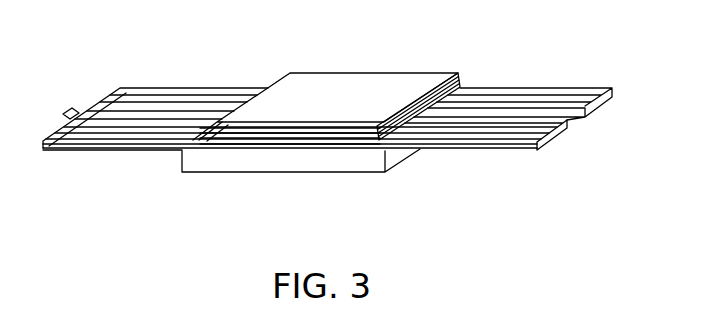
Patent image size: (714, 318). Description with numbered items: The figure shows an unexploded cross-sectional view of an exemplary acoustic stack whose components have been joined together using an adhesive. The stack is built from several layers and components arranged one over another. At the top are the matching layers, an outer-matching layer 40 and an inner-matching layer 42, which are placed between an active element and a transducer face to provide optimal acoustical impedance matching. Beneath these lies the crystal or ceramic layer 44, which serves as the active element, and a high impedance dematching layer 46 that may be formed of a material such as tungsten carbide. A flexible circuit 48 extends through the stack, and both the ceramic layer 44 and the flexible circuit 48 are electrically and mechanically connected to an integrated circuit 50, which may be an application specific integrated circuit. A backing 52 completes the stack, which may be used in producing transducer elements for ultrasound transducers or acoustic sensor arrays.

The outer-matching layer 40 is at (430, 73).
The inner-matching layer 42 is at (462, 86).
The ceramic layer 44 is at (463, 89).
The dematching layer 46 is at (470, 95).
The flexible circuit 48 is at (430, 153).
The integrated circuit 50 is at (180, 152).
The backing 52 is at (233, 180).